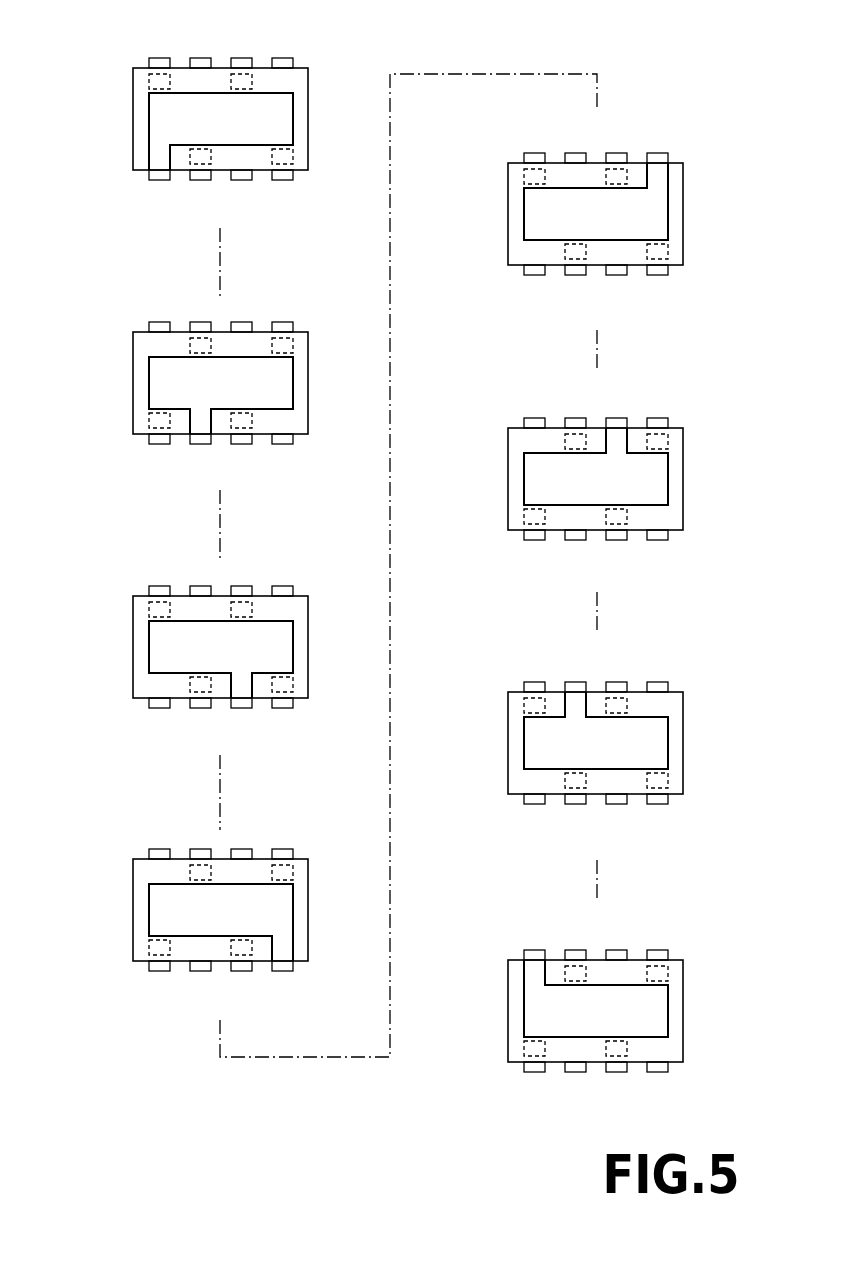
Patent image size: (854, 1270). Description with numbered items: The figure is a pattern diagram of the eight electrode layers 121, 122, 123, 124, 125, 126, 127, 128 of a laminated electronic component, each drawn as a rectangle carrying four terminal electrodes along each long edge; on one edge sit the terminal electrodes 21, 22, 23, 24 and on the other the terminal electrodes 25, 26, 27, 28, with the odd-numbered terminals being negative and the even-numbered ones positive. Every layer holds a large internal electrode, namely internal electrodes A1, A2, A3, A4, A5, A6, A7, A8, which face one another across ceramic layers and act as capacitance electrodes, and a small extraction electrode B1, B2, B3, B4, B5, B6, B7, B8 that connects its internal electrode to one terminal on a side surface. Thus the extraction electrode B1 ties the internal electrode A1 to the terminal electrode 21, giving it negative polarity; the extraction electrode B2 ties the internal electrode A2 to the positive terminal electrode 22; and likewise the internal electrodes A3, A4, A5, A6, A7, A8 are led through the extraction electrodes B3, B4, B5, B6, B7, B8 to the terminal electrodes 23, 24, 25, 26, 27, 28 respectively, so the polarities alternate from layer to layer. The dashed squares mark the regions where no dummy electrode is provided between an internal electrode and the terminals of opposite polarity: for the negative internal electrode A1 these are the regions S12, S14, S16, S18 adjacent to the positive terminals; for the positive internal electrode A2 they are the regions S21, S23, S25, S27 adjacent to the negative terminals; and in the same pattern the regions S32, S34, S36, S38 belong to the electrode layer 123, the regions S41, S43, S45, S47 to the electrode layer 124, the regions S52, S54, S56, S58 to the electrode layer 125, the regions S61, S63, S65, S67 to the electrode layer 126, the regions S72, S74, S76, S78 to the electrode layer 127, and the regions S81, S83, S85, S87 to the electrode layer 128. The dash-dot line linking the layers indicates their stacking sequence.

The terminal electrode 21 is at (348, 644).
The terminal electrode 22 is at (388, 644).
The terminal electrode 23 is at (430, 644).
The terminal electrode 24 is at (471, 644).
The terminal electrode 25 is at (471, 486).
The terminal electrode 26 is at (430, 486).
The terminal electrode 27 is at (388, 486).
The terminal electrode 28 is at (348, 486).
The electrode layer 121 is at (172, 119).
The electrode layer 122 is at (172, 383).
The electrode layer 123 is at (172, 647).
The electrode layer 124 is at (172, 910).
The electrode layer 125 is at (547, 214).
The electrode layer 126 is at (547, 479).
The electrode layer 127 is at (547, 743).
The electrode layer 128 is at (547, 1011).
The internal electrode A1 is at (251, 131).
The internal electrode A2 is at (251, 395).
The internal electrode A3 is at (190, 659).
The internal electrode A4 is at (190, 922).
The internal electrode A5 is at (565, 201).
The internal electrode A6 is at (565, 466).
The internal electrode A7 is at (626, 730).
The internal electrode A8 is at (626, 998).
The extraction electrode B1 is at (128, 157).
The extraction electrode B2 is at (149, 401).
The extraction electrode B3 is at (292, 665).
The extraction electrode B4 is at (312, 948).
The extraction electrode B5 is at (687, 176).
The extraction electrode B6 is at (667, 459).
The extraction electrode B7 is at (524, 723).
The extraction electrode B8 is at (505, 971).
The region S12 is at (146, 134).
The region S14 is at (319, 156).
The region S16 is at (298, 79).
The region S18 is at (123, 79).
The region S21 is at (123, 420).
The region S23 is at (298, 423).
The region S25 is at (319, 343).
The region S27 is at (144, 343).
The region S32 is at (144, 684).
The region S34 is at (319, 684).
The region S36 is at (298, 607).
The region S38 is at (123, 607).
The region S41 is at (123, 947).
The region S43 is at (298, 925).
The region S45 is at (319, 870).
The region S47 is at (144, 870).
The region S52 is at (519, 252).
The region S54 is at (694, 252).
The region S56 is at (673, 197).
The region S58 is at (498, 174).
The region S61 is at (498, 516).
The region S63 is at (673, 516).
The region S65 is at (694, 442).
The region S67 is at (519, 436).
The region S72 is at (519, 780).
The region S74 is at (694, 780).
The region S76 is at (673, 704).
The region S78 is at (498, 702).
The region S81 is at (498, 1049).
The region S83 is at (673, 1049).
The region S85 is at (694, 972).
The region S87 is at (521, 994).